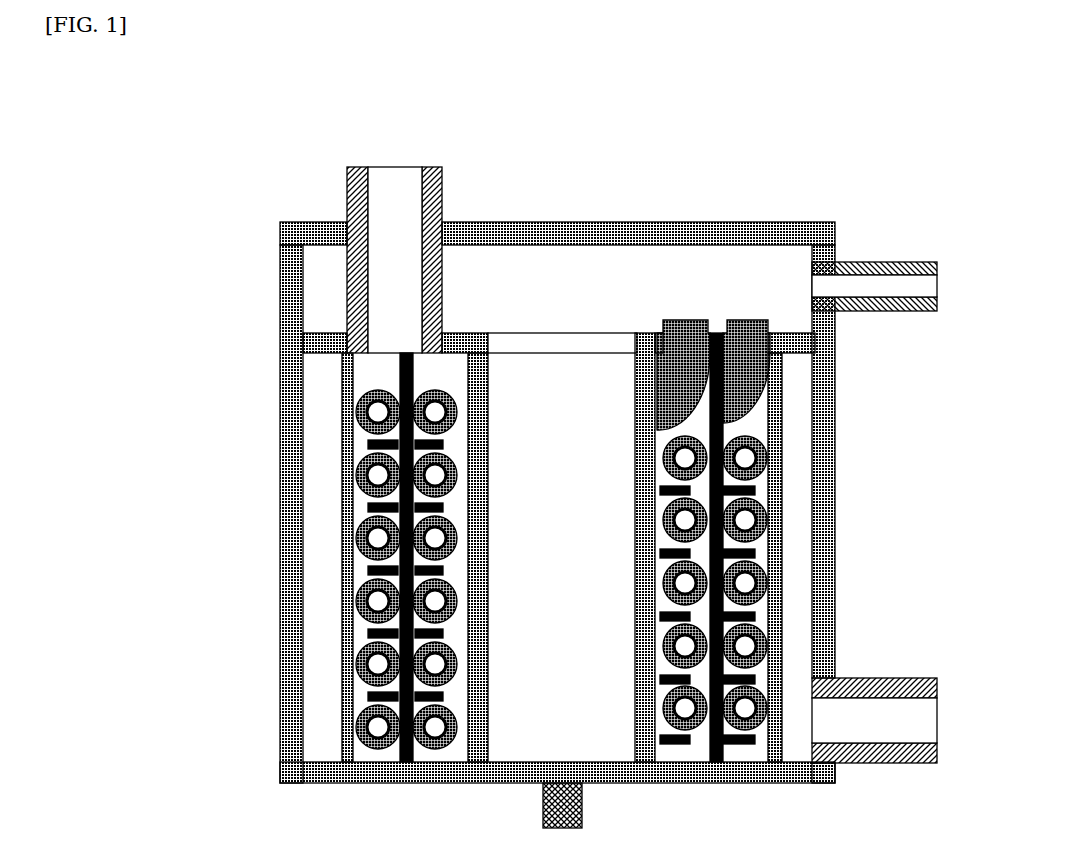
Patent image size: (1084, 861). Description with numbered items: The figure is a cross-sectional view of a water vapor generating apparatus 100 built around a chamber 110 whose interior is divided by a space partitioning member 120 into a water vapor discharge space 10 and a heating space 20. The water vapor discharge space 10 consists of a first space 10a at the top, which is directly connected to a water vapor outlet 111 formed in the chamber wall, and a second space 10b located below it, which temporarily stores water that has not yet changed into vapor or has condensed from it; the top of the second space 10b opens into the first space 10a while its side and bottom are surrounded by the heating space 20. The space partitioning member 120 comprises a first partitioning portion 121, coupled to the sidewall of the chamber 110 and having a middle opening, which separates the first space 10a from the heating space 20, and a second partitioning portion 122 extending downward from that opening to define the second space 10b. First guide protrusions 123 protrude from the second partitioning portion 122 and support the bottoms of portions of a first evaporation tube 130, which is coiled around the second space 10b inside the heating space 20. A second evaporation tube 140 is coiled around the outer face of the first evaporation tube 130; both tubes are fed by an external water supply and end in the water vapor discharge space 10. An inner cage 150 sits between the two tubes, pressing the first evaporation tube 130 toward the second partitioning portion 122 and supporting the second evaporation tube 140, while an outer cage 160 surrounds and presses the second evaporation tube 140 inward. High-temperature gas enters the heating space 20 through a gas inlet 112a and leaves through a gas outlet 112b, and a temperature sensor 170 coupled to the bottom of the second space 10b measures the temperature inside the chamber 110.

The water vapor generating apparatus 100 is at (598, 120).
The water vapor discharge space 10 is at (598, 175).
The first space 10a is at (697, 272).
The second space 10b is at (558, 390).
The heating space 20 is at (795, 392).
The chamber 110 is at (835, 409).
The water vapor outlet 111 is at (913, 260).
The gas inlet 112a is at (350, 203).
The gas outlet 112b is at (900, 677).
The space partitioning member 120 is at (195, 298).
The first partitioning portion 121 is at (342, 334).
The second partitioning portion 122 is at (467, 382).
The first guide protrusions 123 is at (340, 433).
The first evaporation tube 130 is at (755, 545).
The second evaporation tube 140 is at (775, 580).
The inner cage 150 is at (340, 588).
The outer cage 160 is at (340, 503).
The temperature sensor 170 is at (582, 805).